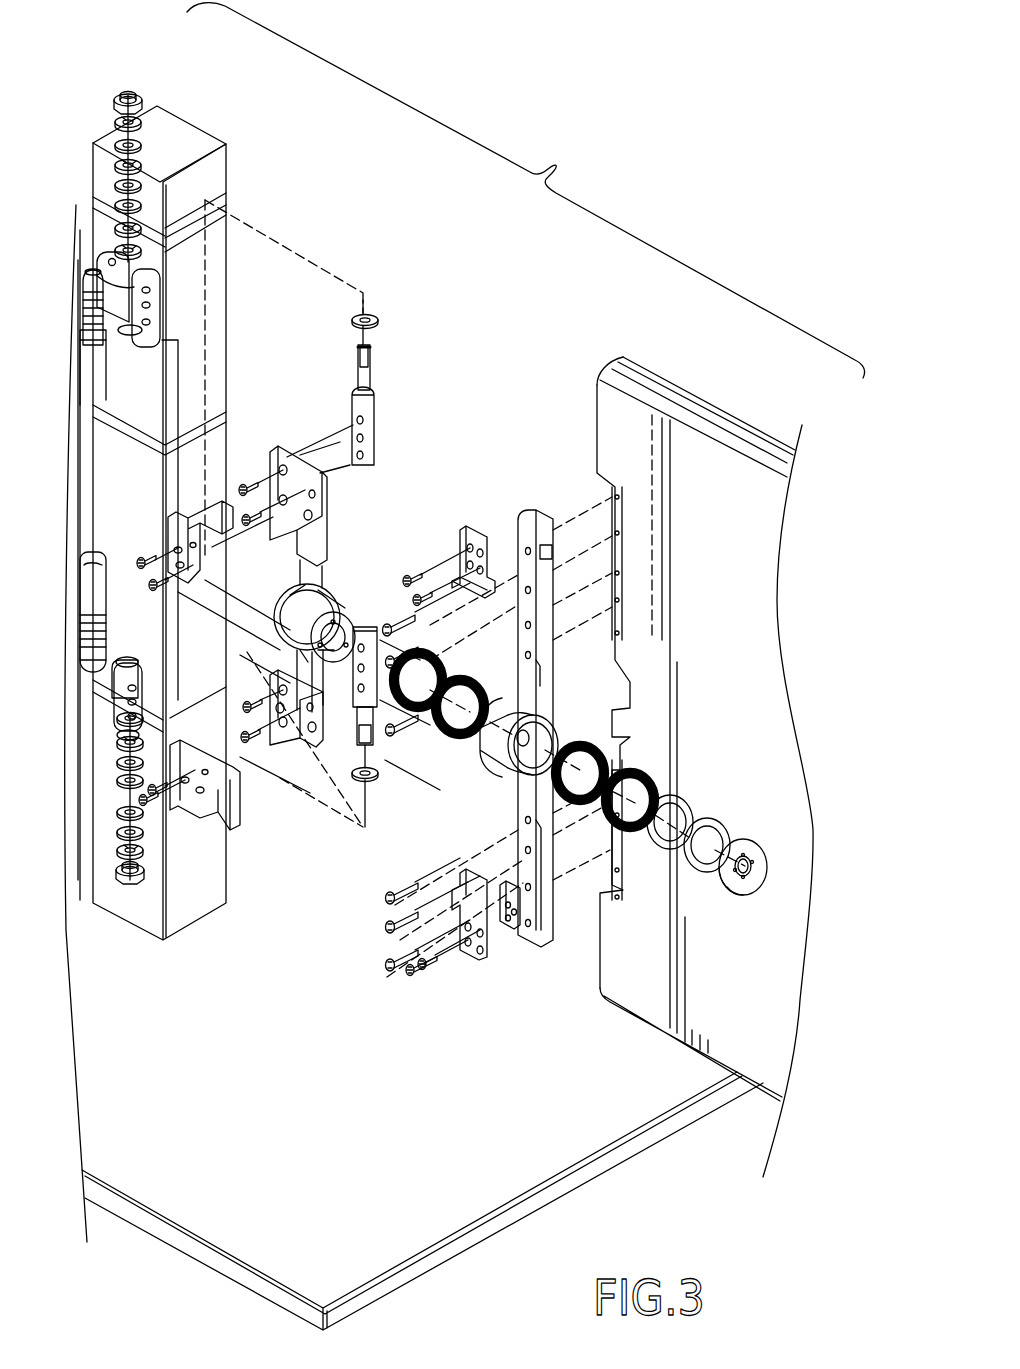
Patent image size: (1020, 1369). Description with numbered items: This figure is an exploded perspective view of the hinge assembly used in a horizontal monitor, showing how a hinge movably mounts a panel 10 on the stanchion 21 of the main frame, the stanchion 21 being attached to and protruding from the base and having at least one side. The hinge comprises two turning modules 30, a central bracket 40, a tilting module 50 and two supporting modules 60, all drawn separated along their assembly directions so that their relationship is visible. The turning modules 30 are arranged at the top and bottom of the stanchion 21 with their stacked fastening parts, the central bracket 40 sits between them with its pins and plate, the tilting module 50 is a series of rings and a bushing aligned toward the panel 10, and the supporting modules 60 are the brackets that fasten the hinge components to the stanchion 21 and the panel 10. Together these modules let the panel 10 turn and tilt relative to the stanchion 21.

The panel 10 is at (690, 403).
The stanchion 21 is at (196, 140).
The turning module 30 is at (155, 73).
The central bracket 40 is at (349, 574).
The tilting module 50 is at (662, 745).
The supporting module 60 is at (225, 843).